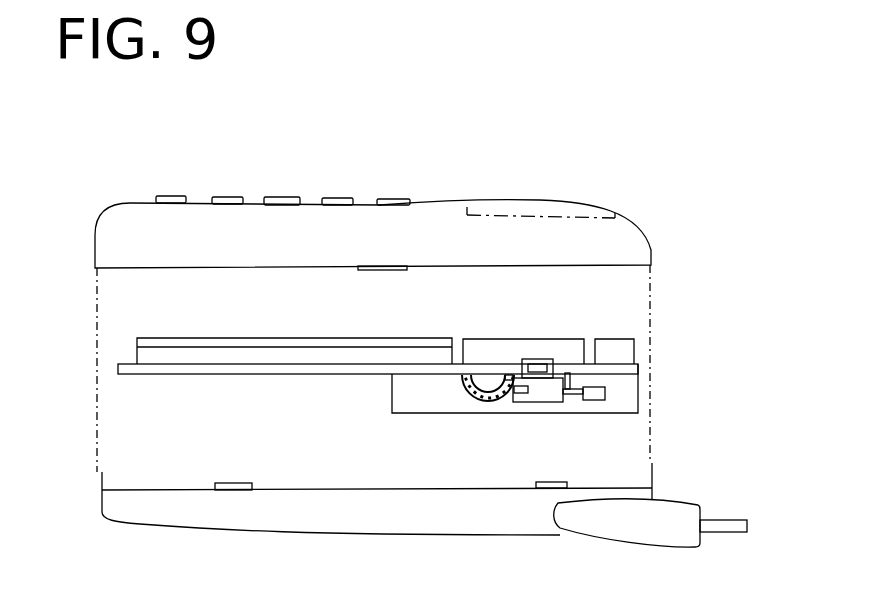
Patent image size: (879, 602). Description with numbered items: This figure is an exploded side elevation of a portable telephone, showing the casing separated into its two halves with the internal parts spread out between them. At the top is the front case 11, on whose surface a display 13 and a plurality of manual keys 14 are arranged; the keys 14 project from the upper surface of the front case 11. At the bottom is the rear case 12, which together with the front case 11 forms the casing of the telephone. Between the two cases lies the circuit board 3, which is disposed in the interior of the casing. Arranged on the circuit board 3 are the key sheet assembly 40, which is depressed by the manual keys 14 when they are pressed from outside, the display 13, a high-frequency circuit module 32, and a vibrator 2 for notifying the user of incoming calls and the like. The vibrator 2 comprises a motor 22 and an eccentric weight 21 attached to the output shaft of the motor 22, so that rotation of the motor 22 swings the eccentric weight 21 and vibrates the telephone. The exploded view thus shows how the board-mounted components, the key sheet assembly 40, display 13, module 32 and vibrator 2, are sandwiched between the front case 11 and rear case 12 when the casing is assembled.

The front case 11 is at (642, 231).
The rear case 12 is at (510, 513).
The display 13 is at (532, 338).
The manual keys 14 is at (285, 196).
The key sheet assembly 40 is at (282, 338).
The circuit board 3 is at (276, 375).
The high-frequency circuit module 32 is at (437, 400).
The vibrator 2 is at (635, 399).
The eccentric weight 21 is at (597, 400).
The motor 22 is at (550, 401).